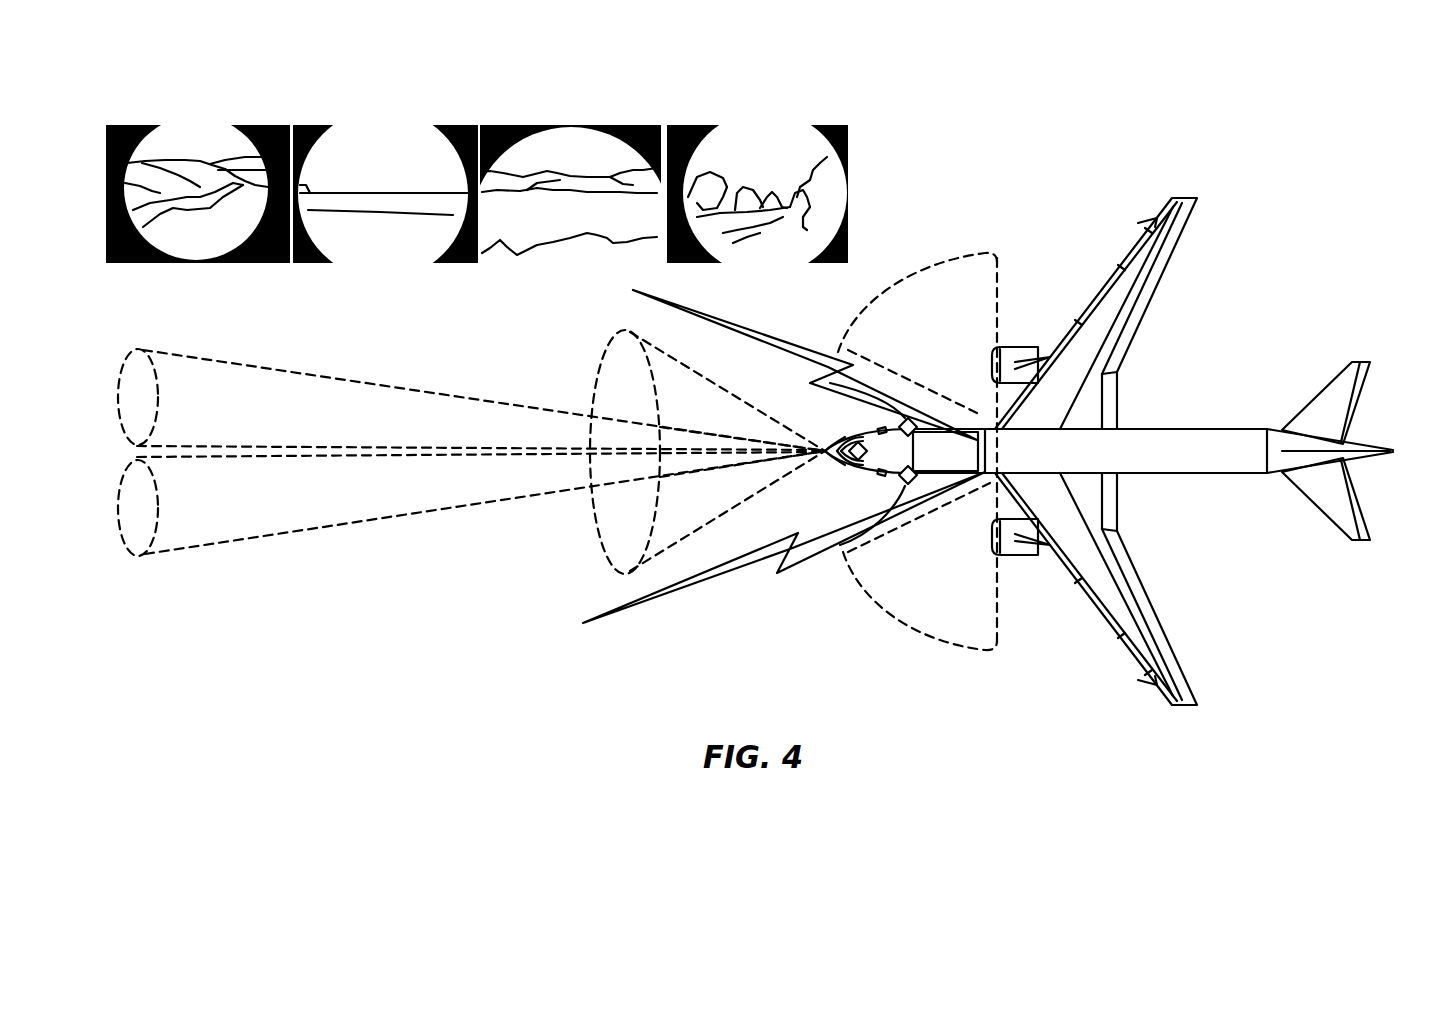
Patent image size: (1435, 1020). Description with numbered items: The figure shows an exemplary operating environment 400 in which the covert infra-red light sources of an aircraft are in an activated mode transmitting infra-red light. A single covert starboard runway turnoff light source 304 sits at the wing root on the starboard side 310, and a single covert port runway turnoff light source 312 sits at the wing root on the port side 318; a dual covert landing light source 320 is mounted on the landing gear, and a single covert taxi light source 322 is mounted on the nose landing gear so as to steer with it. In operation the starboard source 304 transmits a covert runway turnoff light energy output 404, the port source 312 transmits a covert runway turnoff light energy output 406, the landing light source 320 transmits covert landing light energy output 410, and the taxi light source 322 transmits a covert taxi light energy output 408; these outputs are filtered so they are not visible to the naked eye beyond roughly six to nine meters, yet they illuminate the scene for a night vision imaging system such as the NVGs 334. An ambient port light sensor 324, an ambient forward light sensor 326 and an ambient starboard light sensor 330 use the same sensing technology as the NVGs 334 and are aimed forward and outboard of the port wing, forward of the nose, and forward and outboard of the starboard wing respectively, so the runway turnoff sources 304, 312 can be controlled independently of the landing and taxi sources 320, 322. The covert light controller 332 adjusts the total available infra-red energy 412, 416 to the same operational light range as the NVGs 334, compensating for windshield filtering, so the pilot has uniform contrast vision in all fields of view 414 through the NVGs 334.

The operating environment 400 is at (1134, 94).
The fields of view 414 is at (503, 103).
The covert landing light energy output 410 is at (140, 387).
The covert taxi light energy output 408 is at (648, 466).
The dual covert landing light source 320 is at (807, 447).
The total available infra-red energy 416 is at (677, 305).
The total available infra-red energy 412 is at (690, 586).
The covert runway turnoff light energy output 404 is at (930, 313).
The covert runway turnoff light energy output 406 is at (930, 611).
The starboard side 310 is at (1212, 319).
The port side 318 is at (1181, 588).
The single covert starboard runway turnoff light source 304 is at (995, 427).
The single covert port runway turnoff light source 312 is at (995, 475).
The covert light controller 332 is at (1193, 429).
The NVGs 334 is at (970, 427).
The ambient starboard light sensor 330 is at (901, 415).
The ambient port light sensor 324 is at (847, 553).
The ambient forward light sensor 326 is at (857, 445).
The single covert taxi light source 322 is at (823, 458).